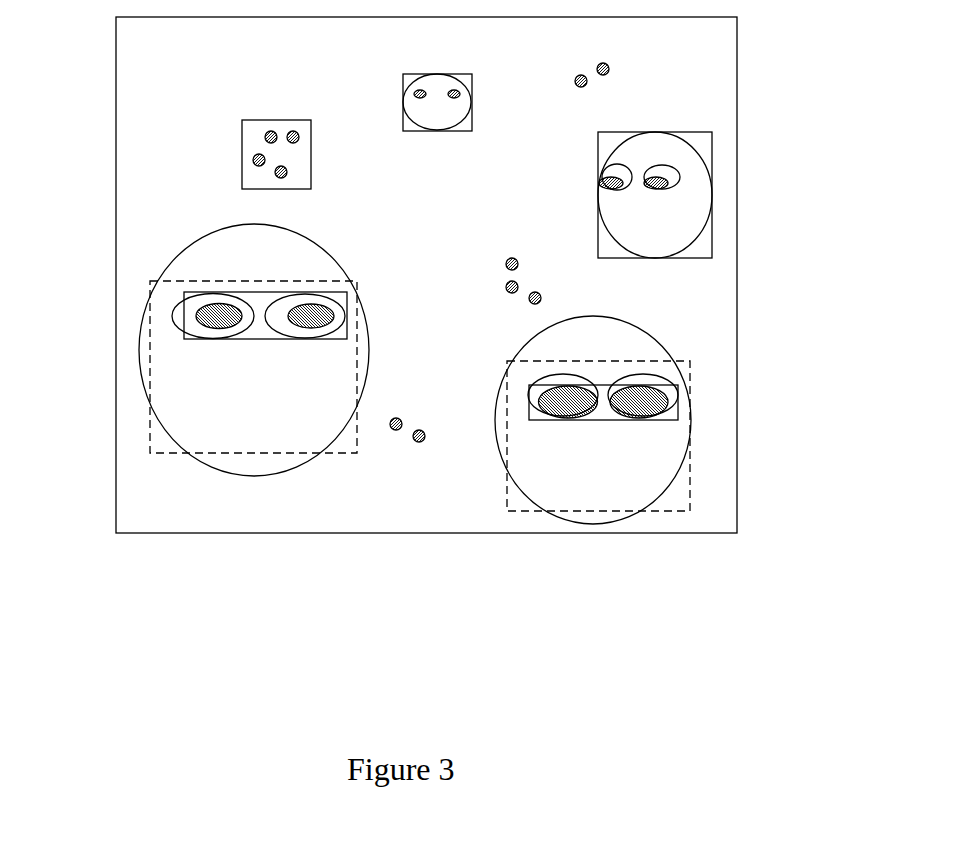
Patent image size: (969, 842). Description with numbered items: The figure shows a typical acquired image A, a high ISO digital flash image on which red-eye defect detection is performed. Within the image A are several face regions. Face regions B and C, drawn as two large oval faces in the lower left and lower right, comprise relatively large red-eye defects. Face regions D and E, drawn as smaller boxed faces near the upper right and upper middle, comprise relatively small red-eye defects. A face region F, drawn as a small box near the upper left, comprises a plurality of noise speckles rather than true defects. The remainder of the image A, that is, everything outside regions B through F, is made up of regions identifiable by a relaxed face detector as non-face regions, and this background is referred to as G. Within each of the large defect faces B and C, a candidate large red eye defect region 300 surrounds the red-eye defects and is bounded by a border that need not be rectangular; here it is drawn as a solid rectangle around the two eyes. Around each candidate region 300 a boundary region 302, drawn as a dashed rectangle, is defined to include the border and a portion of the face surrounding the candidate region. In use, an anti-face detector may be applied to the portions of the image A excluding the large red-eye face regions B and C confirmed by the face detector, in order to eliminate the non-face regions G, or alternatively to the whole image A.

The image A is at (116, 510).
The face region B is at (655, 338).
The face region C is at (206, 236).
The face region D is at (712, 155).
The face region E is at (472, 108).
The face region F is at (242, 167).
The non-face regions G is at (418, 236).
The candidate large red eye defect region 300 is at (184, 304).
The boundary region 302 is at (150, 350).